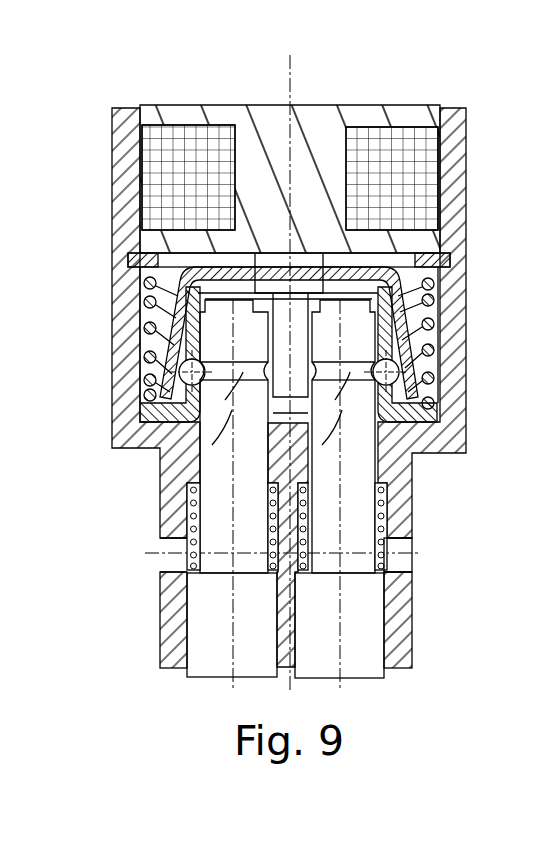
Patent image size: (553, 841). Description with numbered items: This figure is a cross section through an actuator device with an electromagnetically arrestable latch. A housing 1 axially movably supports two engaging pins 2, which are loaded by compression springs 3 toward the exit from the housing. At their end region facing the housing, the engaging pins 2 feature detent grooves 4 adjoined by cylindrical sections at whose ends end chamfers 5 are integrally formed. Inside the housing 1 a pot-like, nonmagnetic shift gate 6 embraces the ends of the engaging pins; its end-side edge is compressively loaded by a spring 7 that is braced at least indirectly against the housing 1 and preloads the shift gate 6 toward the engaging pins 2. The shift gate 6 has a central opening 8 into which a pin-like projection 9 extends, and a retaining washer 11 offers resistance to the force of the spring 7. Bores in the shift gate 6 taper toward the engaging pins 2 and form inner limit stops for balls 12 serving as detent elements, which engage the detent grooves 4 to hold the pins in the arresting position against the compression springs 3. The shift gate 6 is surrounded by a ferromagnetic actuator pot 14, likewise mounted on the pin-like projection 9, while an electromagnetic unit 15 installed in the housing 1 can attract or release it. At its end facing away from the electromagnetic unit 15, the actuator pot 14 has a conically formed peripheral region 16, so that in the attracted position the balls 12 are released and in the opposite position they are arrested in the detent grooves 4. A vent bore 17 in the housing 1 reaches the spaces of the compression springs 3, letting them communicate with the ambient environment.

The housing 1 is at (174, 455).
The engaging pins 2 is at (360, 668).
The compression springs 3 is at (190, 505).
The detent grooves 4 is at (243, 390).
The end chamfers 5 is at (436, 286).
The shift gate 6 is at (148, 330).
The spring 7 is at (433, 353).
The central opening 8 is at (298, 235).
The pin-like projection 9 is at (272, 273).
The retaining washer 11 is at (446, 256).
The balls 12 is at (142, 396).
The actuator pot 14 is at (183, 285).
The electromagnetic unit 15 is at (150, 160).
The conically formed peripheral region 16 is at (398, 374).
The vent bore 17 is at (400, 563).